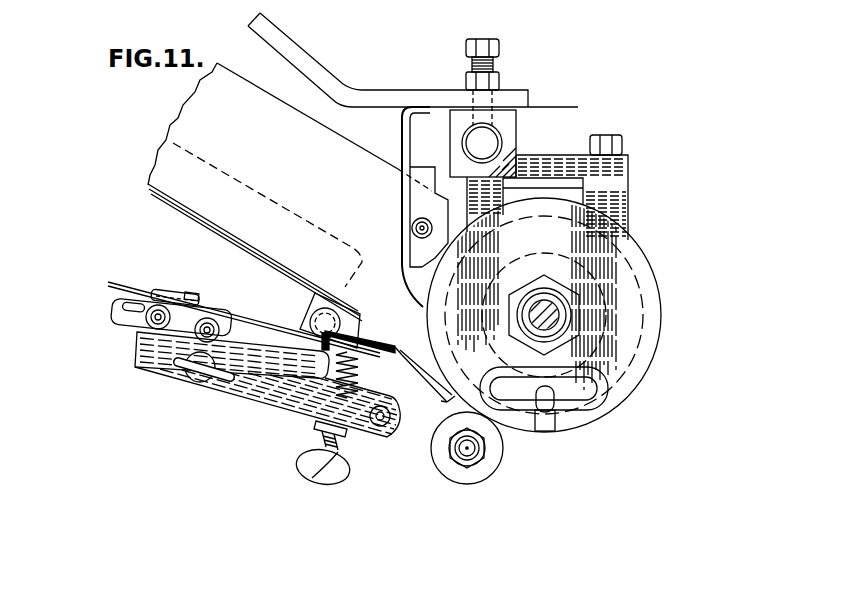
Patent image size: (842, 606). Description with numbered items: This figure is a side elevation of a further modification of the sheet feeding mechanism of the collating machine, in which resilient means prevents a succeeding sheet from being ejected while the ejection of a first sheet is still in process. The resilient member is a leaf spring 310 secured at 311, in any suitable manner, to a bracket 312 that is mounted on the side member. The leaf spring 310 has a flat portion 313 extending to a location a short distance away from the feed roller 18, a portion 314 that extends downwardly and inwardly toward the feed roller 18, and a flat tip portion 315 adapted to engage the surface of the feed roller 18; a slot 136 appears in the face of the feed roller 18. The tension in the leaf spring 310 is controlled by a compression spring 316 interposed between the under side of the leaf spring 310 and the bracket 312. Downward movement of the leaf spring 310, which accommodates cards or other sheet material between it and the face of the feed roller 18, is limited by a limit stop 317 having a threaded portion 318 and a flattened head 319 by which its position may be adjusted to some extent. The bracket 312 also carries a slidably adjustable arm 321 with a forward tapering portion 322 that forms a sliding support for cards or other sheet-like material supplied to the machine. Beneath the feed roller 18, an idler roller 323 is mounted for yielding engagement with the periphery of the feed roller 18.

The feed roller 18 is at (640, 241).
The slot 136 is at (575, 418).
The leaf spring 310 is at (428, 400).
The securing point 311 is at (198, 299).
The bracket 312 is at (140, 358).
The flat portion 313 is at (424, 392).
The downwardly and inwardly extending portion 314 is at (433, 410).
The flat tip portion 315 is at (389, 352).
The compression spring 316 is at (358, 378).
The limit stop 317 is at (330, 370).
The threaded portion 318 is at (316, 437).
The flattened head 319 is at (313, 477).
The slidably adjustable arm 321 is at (113, 311).
The forward tapering portion 322 is at (361, 338).
The idler roller 323 is at (487, 466).